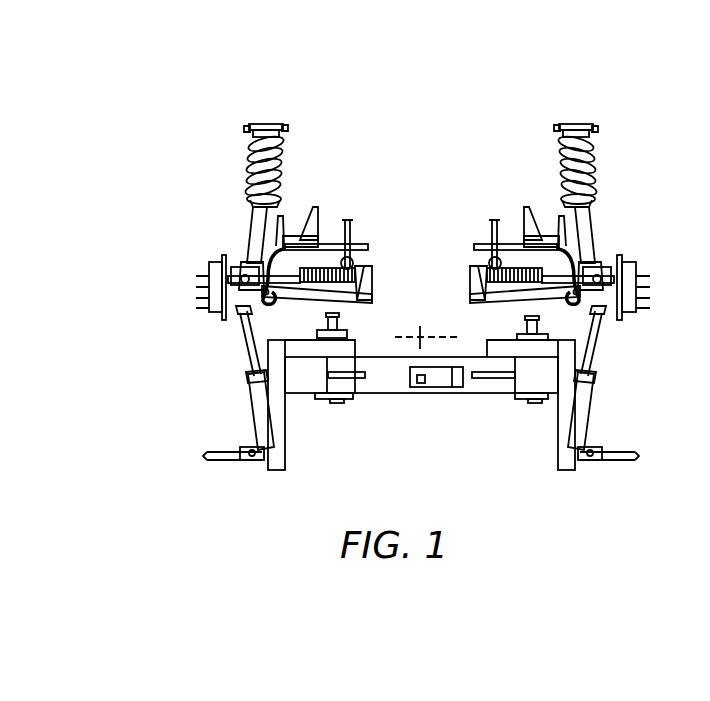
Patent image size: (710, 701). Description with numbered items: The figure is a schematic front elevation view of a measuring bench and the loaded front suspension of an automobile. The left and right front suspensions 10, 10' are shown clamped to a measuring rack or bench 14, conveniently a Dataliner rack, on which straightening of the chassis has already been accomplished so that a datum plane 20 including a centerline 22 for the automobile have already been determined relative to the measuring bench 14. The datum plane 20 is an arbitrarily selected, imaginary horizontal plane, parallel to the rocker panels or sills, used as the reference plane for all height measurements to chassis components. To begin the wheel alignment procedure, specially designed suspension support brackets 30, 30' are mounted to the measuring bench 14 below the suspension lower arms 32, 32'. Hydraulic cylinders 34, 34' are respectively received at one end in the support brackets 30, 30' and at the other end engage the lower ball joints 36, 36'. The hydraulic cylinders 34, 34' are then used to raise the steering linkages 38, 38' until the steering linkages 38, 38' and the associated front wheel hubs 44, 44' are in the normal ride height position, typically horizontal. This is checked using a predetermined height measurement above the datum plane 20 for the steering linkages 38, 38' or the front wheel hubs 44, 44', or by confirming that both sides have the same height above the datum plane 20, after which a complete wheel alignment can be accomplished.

The front suspension 10 is at (533, 269).
The front suspension 10' is at (315, 272).
The measuring bench 14 is at (396, 393).
The datum plane 20 is at (410, 333).
The centerline 22 is at (420, 316).
The suspension support bracket 30 is at (539, 405).
The suspension support bracket 30' is at (314, 405).
The suspension lower arm 32 is at (525, 311).
The suspension lower arm 32' is at (317, 340).
The hydraulic cylinder 34 is at (616, 385).
The hydraulic cylinder 34' is at (226, 385).
The lower ball joint 36 is at (563, 350).
The lower ball joint 36' is at (271, 324).
The steering linkage 38 is at (597, 207).
The steering linkage 38' is at (242, 207).
The front wheel hub 44 is at (653, 272).
The front wheel hub 44' is at (194, 277).